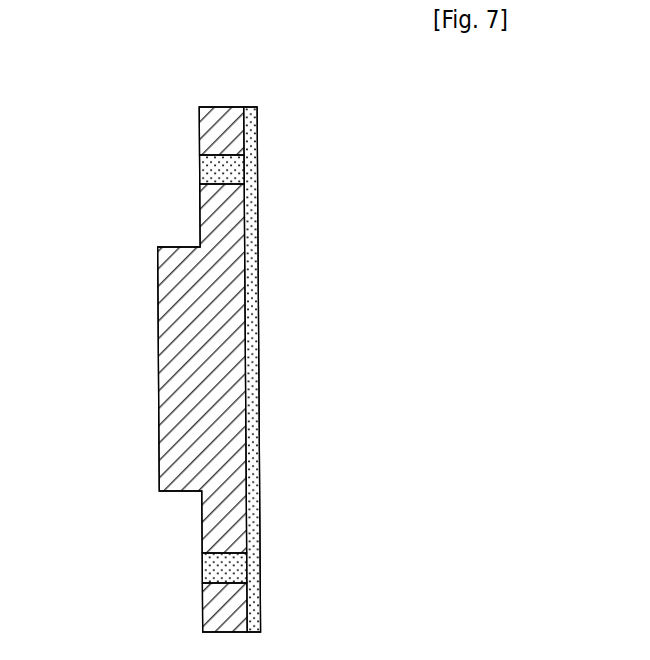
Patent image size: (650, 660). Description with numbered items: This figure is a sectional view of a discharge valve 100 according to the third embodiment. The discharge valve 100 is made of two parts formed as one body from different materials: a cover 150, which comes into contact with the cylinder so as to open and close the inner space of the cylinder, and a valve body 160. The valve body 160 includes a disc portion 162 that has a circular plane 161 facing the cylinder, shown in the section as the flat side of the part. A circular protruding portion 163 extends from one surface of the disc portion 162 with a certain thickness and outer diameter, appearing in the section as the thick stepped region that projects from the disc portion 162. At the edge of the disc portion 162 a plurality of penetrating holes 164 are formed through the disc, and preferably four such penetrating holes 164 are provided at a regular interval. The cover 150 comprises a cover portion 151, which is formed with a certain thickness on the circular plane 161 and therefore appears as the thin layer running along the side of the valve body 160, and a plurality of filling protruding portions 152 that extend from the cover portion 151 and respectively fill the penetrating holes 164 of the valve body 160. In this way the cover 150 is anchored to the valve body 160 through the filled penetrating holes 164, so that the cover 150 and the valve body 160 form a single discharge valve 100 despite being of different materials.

The discharge valve 100 is at (243, 79).
The cover 150 is at (280, 185).
The cover portion 151 is at (258, 260).
The filling protruding portion 152 is at (217, 571).
The valve body 160 is at (150, 232).
The circular plane 161 is at (246, 311).
The disc portion 162 is at (232, 517).
The circular protruding portion 163 is at (172, 437).
The penetrating hole 164 is at (235, 582).